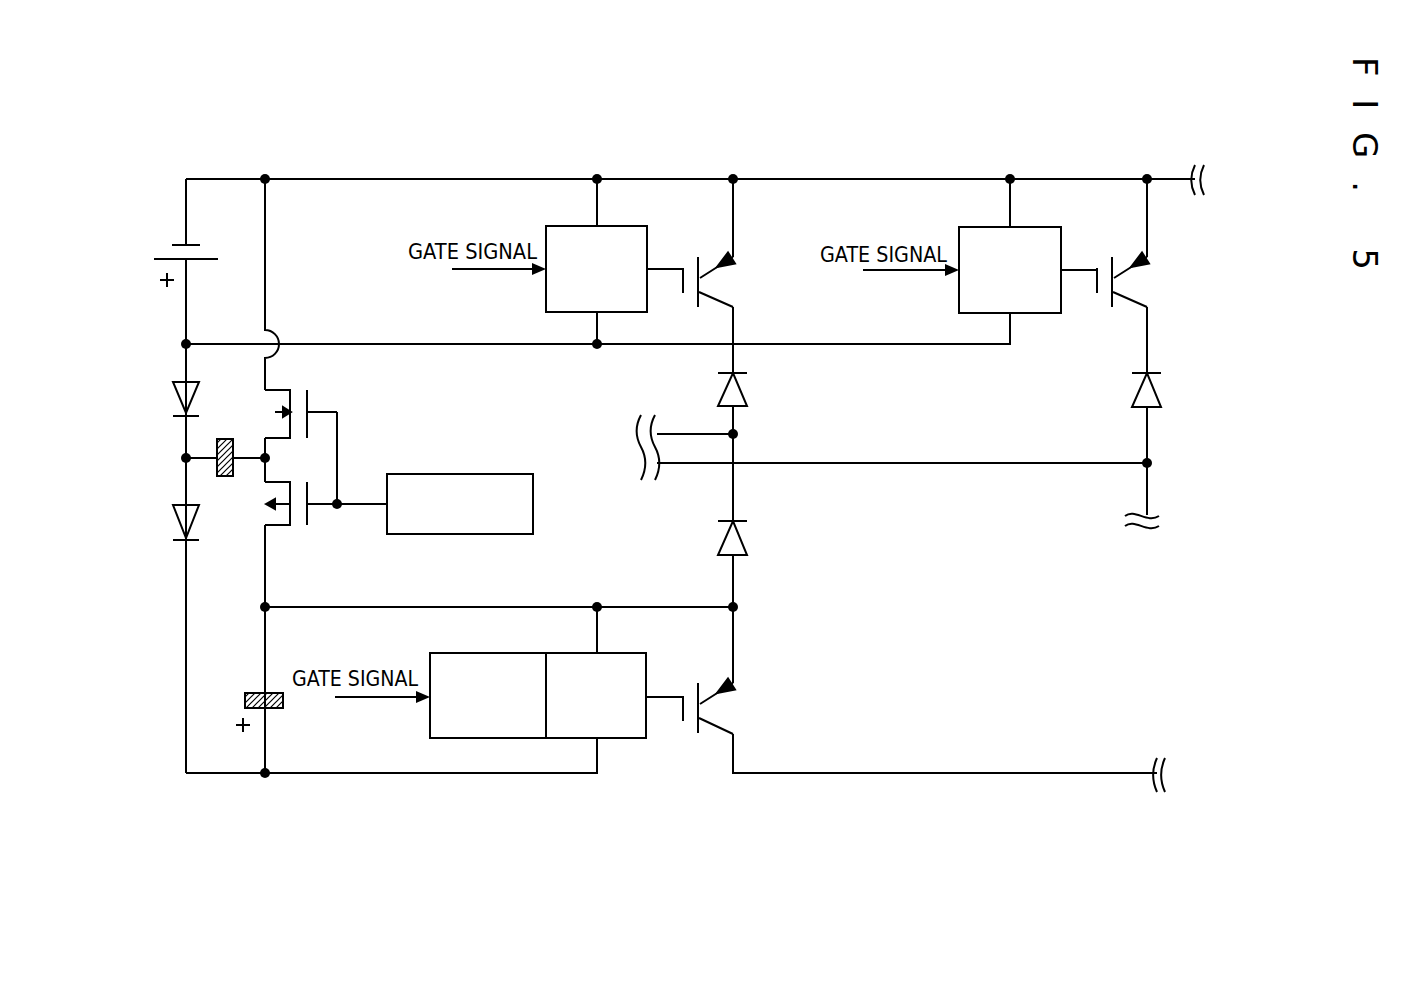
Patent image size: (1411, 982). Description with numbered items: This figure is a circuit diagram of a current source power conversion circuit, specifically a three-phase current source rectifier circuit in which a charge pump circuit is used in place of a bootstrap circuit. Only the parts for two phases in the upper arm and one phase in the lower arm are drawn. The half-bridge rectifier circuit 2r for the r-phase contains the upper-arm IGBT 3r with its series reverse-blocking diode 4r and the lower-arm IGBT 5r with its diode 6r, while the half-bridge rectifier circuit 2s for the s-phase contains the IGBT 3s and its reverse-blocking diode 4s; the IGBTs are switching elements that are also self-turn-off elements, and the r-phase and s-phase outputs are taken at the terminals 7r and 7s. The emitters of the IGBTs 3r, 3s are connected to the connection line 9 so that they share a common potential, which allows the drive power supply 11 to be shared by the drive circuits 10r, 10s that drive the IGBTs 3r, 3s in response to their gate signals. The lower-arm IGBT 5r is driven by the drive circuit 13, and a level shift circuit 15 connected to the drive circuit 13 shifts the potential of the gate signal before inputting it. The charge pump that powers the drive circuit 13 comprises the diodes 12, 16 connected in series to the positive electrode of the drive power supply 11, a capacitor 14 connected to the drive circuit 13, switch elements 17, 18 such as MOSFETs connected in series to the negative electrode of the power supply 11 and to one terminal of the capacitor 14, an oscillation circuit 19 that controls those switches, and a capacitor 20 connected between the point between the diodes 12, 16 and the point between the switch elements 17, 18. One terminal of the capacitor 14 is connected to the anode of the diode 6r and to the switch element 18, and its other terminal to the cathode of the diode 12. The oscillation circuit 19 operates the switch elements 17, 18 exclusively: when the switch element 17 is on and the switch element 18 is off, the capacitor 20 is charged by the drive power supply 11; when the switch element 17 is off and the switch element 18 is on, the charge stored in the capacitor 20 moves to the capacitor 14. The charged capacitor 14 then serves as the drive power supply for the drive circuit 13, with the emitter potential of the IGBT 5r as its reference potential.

The half-bridge rectifier circuit 2r is at (743, 161).
The half-bridge rectifier circuit 2s is at (1157, 161).
The IGBT 3r is at (722, 281).
The IGBT 3s is at (1135, 283).
The diode 4r is at (747, 390).
The diode 4s is at (1162, 390).
The IGBT 5r is at (722, 708).
The diode 6r is at (747, 538).
The output terminal (R phase) 7r is at (742, 434).
The output terminal (S phase) 7s is at (1157, 463).
The connection line 9 is at (1173, 183).
The drive circuit 10r is at (647, 247).
The drive circuit 10s is at (1061, 247).
The drive power supply 11 is at (163, 251).
The diode 12 is at (172, 521).
The drive circuit 13 is at (620, 653).
The capacitor 14 is at (250, 693).
The level shift circuit 15 is at (475, 653).
The diode 16 is at (172, 397).
The switch element 17 is at (278, 390).
The switch element 18 is at (278, 527).
The oscillation circuit 19 is at (460, 474).
The capacitor 20 is at (223, 439).